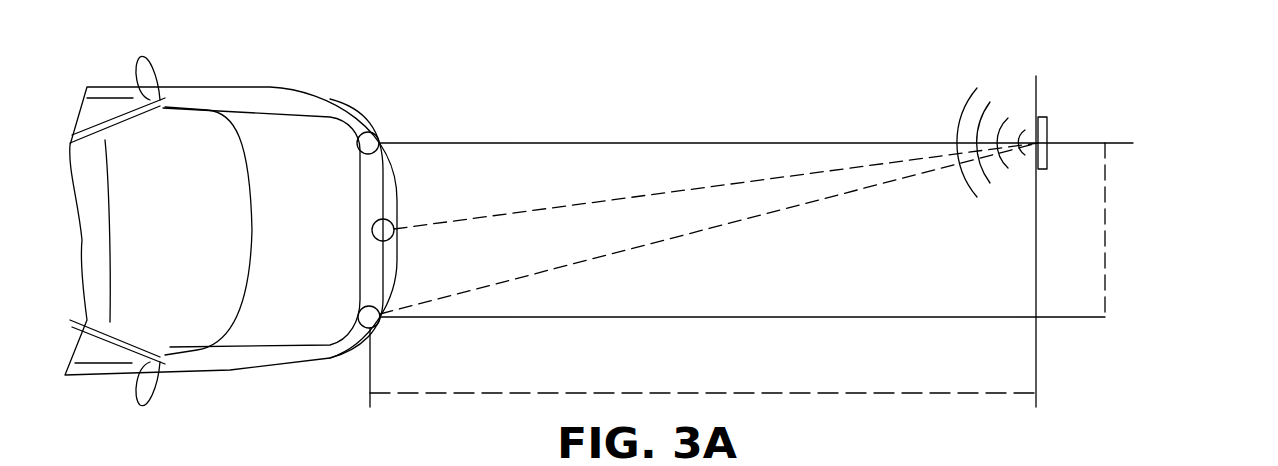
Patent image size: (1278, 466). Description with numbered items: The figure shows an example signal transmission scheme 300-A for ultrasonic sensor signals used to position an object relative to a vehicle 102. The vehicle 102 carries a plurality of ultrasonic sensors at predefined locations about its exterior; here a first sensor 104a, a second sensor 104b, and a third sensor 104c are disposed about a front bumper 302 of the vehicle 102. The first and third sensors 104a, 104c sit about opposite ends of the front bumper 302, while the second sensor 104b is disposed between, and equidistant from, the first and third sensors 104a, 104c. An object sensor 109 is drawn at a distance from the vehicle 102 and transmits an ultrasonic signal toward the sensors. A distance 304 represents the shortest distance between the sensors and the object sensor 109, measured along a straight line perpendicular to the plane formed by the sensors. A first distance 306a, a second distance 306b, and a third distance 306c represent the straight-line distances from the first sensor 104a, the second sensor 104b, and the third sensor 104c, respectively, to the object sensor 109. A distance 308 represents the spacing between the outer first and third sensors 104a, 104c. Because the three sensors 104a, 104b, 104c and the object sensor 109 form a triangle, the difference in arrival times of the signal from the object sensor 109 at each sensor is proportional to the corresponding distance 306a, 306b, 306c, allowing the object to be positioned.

The vehicle 102 is at (218, 87).
The first sensor 104a is at (369, 132).
The second sensor 104b is at (385, 219).
The third sensor 104c is at (374, 328).
The object sensor 109 is at (1047, 127).
The signal transmission scheme 300-A is at (856, 92).
The front bumper 302 is at (352, 362).
The distance 304 is at (862, 395).
The first distance 306a is at (533, 142).
The second distance 306b is at (521, 212).
The third distance 306c is at (768, 214).
The distance 308 is at (1105, 242).